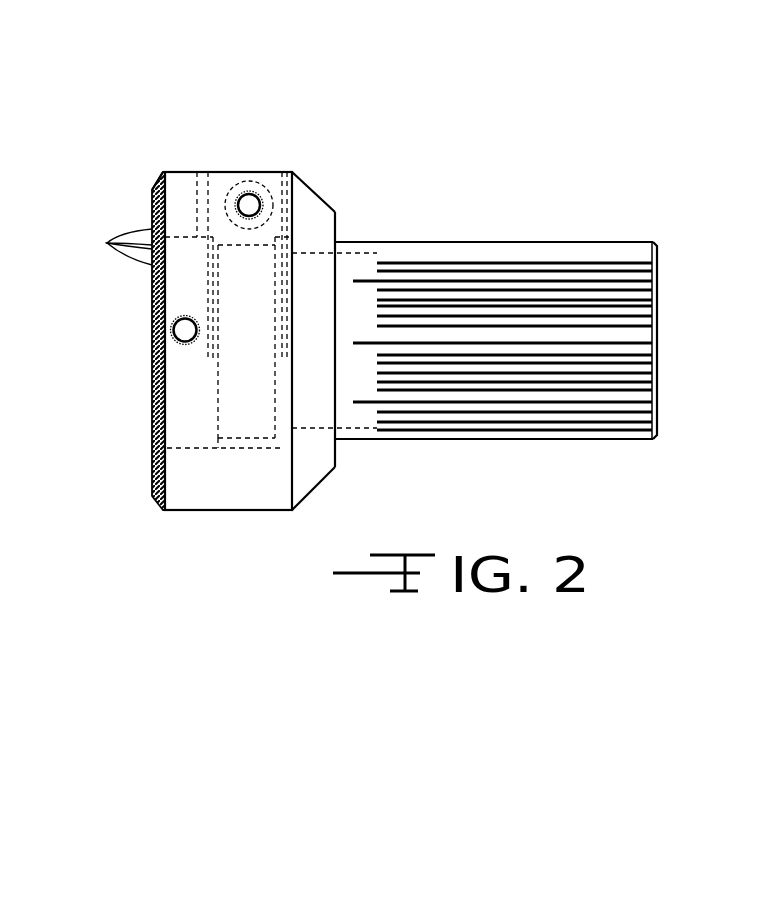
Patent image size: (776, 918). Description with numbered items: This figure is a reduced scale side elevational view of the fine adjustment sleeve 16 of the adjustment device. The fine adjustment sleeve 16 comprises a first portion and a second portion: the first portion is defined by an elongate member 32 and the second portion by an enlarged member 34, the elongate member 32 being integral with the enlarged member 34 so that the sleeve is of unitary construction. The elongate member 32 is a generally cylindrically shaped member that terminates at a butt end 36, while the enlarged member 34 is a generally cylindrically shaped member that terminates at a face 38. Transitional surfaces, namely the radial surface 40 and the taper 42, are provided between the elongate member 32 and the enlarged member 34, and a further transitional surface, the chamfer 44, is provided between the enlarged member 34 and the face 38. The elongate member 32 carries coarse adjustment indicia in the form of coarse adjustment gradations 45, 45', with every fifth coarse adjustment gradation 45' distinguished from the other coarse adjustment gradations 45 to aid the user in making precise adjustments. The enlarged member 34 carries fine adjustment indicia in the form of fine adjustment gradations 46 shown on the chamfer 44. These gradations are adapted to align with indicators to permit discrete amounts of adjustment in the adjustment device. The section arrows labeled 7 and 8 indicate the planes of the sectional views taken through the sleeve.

The fine adjustment sleeve 16 is at (428, 54).
The elongate member 32 is at (585, 195).
The enlarged member 34 is at (302, 142).
The butt end 36 is at (658, 252).
The face 38 is at (152, 424).
The radial surface 40 is at (345, 232).
The taper 42 is at (313, 185).
The chamfer 44 is at (153, 188).
The coarse adjustment gradations 45 is at (547, 346).
The coarse adjustment gradations 45' is at (539, 335).
The fine adjustment gradations 46 is at (111, 247).
The section line 7- 7 is at (228, 131).
The section line 8- 8 is at (192, 102).